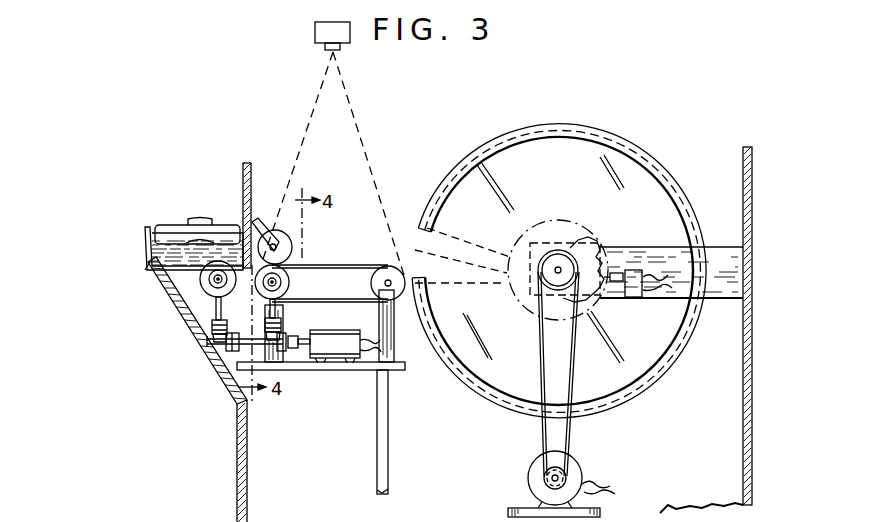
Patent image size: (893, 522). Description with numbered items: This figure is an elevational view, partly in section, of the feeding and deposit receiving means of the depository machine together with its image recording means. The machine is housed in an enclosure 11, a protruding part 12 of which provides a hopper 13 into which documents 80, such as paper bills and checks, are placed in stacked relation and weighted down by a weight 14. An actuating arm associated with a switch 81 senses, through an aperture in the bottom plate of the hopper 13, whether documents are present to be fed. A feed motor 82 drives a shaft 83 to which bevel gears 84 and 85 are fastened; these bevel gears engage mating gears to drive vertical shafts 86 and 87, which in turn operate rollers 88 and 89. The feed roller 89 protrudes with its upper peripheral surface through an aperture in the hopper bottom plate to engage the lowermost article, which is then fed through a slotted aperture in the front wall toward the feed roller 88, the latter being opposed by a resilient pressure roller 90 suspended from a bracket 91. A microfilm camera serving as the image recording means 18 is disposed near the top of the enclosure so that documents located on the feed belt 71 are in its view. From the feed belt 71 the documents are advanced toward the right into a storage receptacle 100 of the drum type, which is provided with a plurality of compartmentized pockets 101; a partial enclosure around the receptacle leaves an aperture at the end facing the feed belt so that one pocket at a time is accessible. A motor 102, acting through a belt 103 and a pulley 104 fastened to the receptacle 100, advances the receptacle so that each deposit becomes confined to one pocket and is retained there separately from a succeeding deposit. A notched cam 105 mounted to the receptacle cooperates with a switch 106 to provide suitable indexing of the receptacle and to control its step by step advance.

The enclosure 11 is at (238, 462).
The protruding part of the enclosure 12 is at (166, 295).
The hopper 13 is at (195, 200).
The weight 14 is at (170, 225).
The microfilm camera 18 is at (318, 30).
The feed belt 71 is at (366, 264).
The documents 80 is at (150, 252).
The switch 81 is at (167, 273).
The feed motor 82 is at (332, 357).
The shaft 83 is at (247, 347).
The bevel gear 84 is at (285, 332).
The bevel gear 85 is at (225, 348).
The vertical shaft 86 is at (268, 309).
The vertical shaft 87 is at (212, 310).
The feed roller 88 is at (290, 282).
The feed roller 89 is at (207, 280).
The resilient pressure roller 90 is at (292, 243).
The bracket 91 is at (266, 223).
The storage receptacle 100 is at (651, 125).
The compartmentized pockets 101 is at (468, 274).
The motor 102 is at (534, 463).
The belt 103 is at (574, 450).
The pulley 104 is at (556, 250).
The notched cam 105 is at (600, 243).
The switch 106 is at (633, 299).